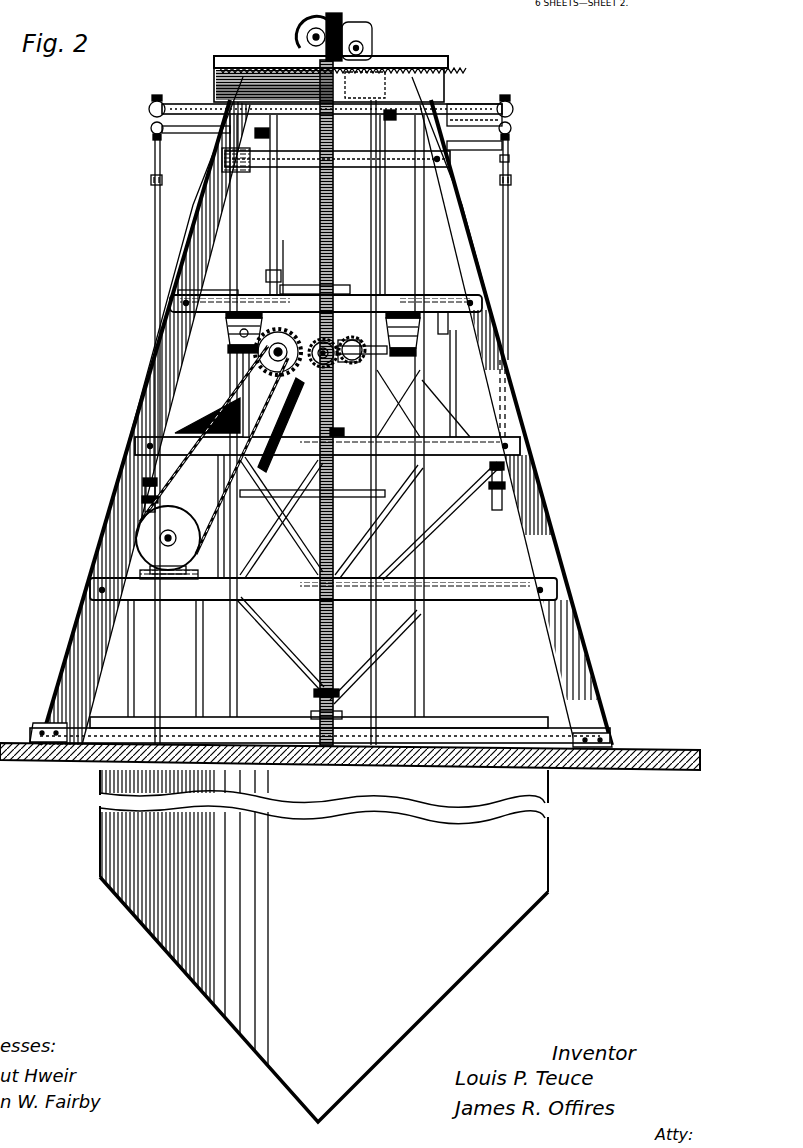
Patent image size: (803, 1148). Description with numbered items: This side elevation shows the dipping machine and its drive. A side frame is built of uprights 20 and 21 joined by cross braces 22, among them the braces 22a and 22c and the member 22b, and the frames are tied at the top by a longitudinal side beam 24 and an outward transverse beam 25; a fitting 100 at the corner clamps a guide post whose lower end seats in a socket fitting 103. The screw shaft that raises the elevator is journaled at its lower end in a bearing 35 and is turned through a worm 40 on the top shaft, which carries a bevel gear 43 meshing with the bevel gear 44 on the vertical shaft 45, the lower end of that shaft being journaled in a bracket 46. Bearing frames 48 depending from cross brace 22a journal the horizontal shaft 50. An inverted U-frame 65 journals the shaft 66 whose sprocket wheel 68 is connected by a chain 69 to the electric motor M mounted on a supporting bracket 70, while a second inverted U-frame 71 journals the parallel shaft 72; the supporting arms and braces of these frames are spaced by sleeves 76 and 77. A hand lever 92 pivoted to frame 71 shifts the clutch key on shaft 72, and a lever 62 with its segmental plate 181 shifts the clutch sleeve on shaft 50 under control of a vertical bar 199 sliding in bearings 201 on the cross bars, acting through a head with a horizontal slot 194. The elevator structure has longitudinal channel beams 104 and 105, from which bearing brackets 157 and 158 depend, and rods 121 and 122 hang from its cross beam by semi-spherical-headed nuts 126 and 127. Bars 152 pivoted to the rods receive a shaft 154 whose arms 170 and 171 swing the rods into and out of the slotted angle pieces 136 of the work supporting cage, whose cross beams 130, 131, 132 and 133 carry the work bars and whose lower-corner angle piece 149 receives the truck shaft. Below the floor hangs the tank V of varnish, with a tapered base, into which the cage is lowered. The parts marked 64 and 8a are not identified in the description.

The upright 20 is at (108, 520).
The upright 21 is at (532, 492).
The cross brace 22 is at (503, 602).
The cross brace 22a is at (443, 336).
The intermediate cross platform 22b is at (455, 458).
The cross brace 22c is at (452, 164).
The side beam 24 is at (214, 70).
The transverse beam 25 is at (214, 92).
The bearing 35 is at (318, 716).
The worm 40 is at (342, 28).
The bevel gear 43 is at (372, 34).
The bevel gear 44 is at (375, 52).
The vertical shaft 45 is at (395, 64).
The bracket 46 is at (440, 268).
The bearing frame 48 is at (212, 302).
The horizontal shaft 50 is at (230, 348).
The lever 62 is at (268, 462).
The pin 64 is at (246, 336).
The inverted U-frame 65 is at (228, 338).
The shaft 66 is at (232, 368).
The sprocket wheel 68 is at (243, 385).
The chain 69 is at (222, 416).
The supporting bracket 70 is at (176, 598).
The inverted U-frame 71 is at (345, 300).
The shaft 72 is at (368, 312).
The sleeve 76 is at (282, 290).
The sleeve 77 is at (302, 276).
The bearing hanger 8a is at (392, 382).
The hand lever 92 is at (350, 428).
The fitting 100 is at (450, 62).
The socket fitting 103 is at (428, 716).
The channel beam 104 is at (332, 103).
The channel beam 105 is at (390, 112).
The rod 121 is at (510, 265).
The rod 122 is at (153, 243).
The upper nut 126 is at (150, 104).
The lower nut 127 is at (150, 133).
The cross beam 130 is at (302, 512).
The cross beam 131 is at (270, 560).
The cross beam 132 is at (412, 545).
The cross beam 133 is at (350, 562).
The angle piece 136 is at (158, 500).
The angle piece 149 is at (314, 693).
The bar 152 is at (150, 180).
The shaft 154 is at (511, 159).
The bearing bracket 157 is at (270, 135).
The bearing bracket 158 is at (465, 104).
The arm 170 is at (450, 145).
The arm 171 is at (222, 160).
The segmental plate 181 is at (272, 374).
The horizontal slot 194 is at (335, 370).
The vertical bar 199 is at (378, 232).
The bearing 201 is at (380, 206).
The electric motor M is at (176, 540).
The tank V is at (515, 908).